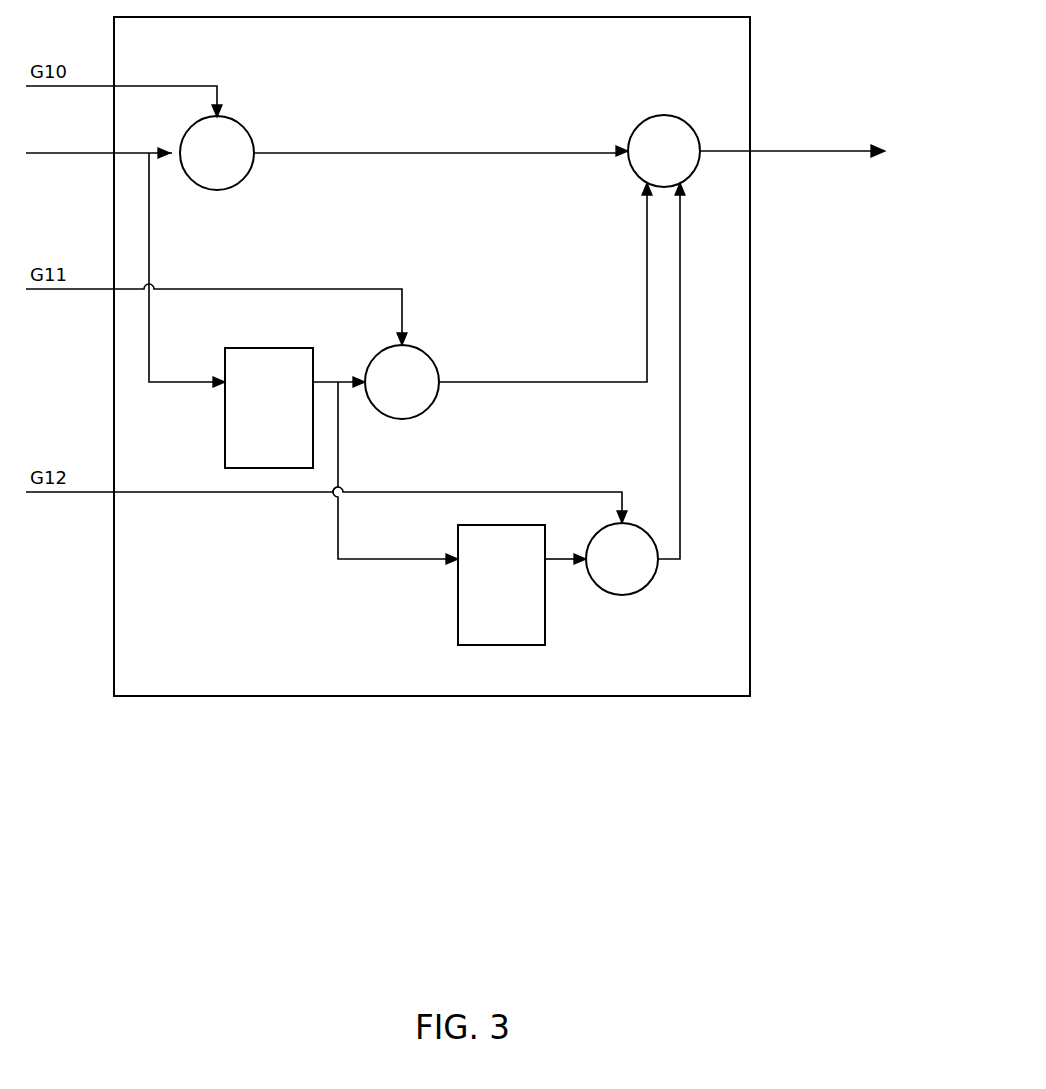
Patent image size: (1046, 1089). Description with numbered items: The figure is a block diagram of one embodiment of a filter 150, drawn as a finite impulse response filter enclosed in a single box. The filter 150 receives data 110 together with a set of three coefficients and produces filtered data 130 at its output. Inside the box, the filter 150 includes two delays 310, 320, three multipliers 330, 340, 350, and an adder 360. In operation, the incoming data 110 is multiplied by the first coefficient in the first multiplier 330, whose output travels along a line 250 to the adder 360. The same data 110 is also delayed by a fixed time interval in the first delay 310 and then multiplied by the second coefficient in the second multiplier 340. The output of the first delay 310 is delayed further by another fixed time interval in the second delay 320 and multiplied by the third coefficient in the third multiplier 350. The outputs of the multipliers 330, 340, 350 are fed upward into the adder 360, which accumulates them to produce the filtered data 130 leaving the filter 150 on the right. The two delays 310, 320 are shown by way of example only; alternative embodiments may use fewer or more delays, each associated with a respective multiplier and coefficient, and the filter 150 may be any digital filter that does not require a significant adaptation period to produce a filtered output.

The filter 150 is at (417, 46).
The data 110 is at (125, 257).
The filtered data 130 is at (808, 140).
The signal line 250 is at (473, 153).
The delay 310 is at (341, 456).
The delay 320 is at (522, 585).
The multiplier 330 is at (243, 127).
The multiplier 340 is at (432, 356).
The multiplier 350 is at (646, 586).
The adder 360 is at (663, 115).